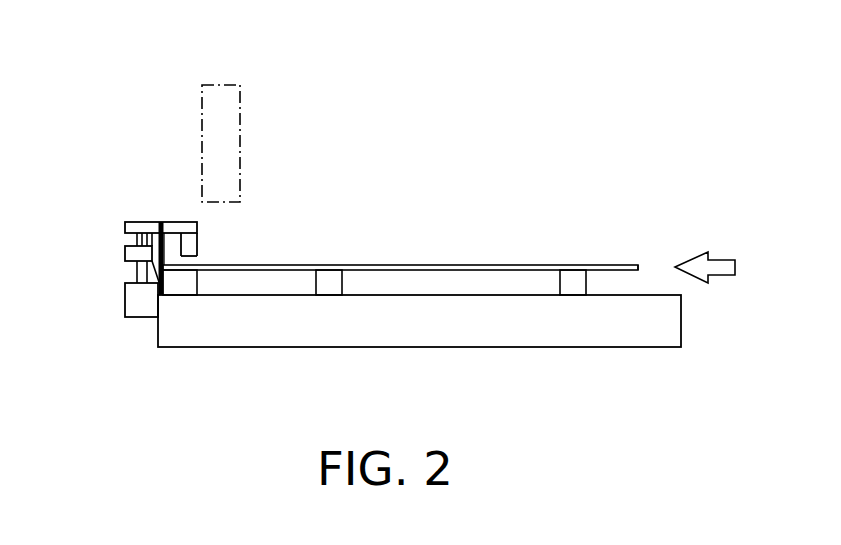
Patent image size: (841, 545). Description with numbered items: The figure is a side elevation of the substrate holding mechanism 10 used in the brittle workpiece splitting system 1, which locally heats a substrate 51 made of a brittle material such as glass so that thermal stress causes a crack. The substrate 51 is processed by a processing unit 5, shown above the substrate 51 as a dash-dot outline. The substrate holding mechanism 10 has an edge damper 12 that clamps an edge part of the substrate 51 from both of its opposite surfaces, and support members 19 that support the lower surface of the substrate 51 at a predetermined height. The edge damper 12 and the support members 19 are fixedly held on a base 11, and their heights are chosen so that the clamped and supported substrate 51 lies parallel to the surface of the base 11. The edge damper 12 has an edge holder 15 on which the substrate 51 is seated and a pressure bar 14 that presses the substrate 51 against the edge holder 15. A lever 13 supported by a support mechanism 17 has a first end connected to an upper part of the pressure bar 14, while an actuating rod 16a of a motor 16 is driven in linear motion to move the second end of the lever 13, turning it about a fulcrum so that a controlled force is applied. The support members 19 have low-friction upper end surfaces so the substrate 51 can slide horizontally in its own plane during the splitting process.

The brittle workpiece splitting system 1 is at (412, 143).
The processing unit 5 is at (227, 100).
The substrate holding mechanism 10 is at (405, 218).
The base 11 is at (680, 318).
The edge damper 12 is at (158, 228).
The lever 13 is at (140, 223).
The pressure bar 14 is at (197, 250).
The edge holder 15 is at (182, 283).
The motor 16 is at (128, 305).
The actuating rod 16a is at (135, 275).
The support mechanism 17 is at (161, 225).
The support members 19 is at (328, 285).
The substrate 51 is at (630, 263).